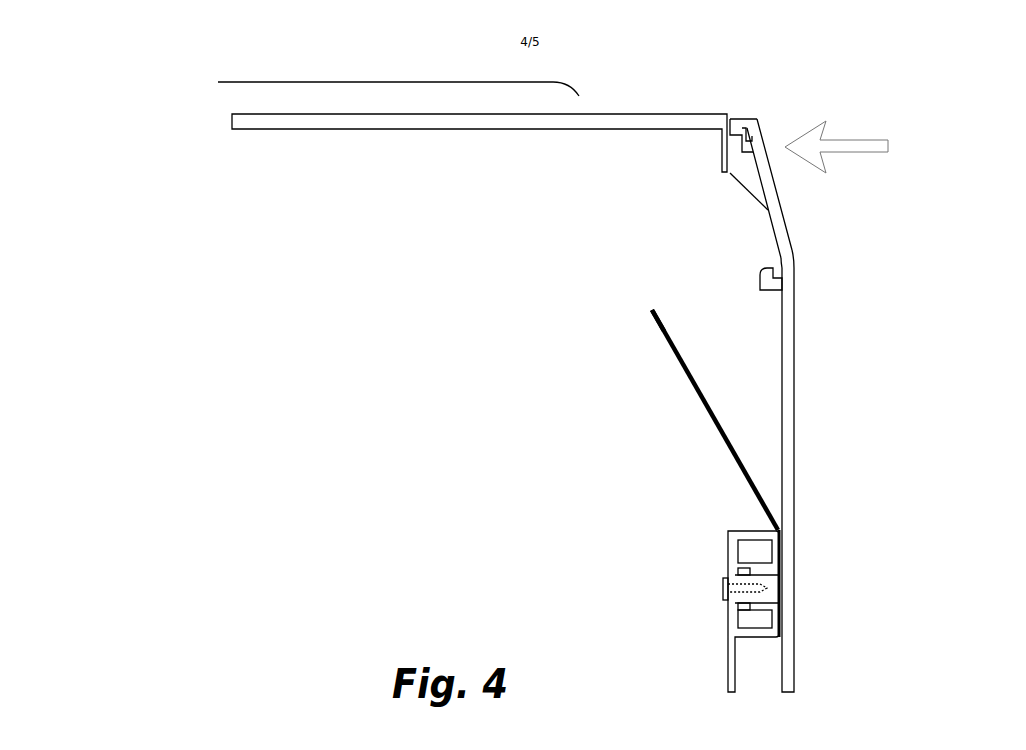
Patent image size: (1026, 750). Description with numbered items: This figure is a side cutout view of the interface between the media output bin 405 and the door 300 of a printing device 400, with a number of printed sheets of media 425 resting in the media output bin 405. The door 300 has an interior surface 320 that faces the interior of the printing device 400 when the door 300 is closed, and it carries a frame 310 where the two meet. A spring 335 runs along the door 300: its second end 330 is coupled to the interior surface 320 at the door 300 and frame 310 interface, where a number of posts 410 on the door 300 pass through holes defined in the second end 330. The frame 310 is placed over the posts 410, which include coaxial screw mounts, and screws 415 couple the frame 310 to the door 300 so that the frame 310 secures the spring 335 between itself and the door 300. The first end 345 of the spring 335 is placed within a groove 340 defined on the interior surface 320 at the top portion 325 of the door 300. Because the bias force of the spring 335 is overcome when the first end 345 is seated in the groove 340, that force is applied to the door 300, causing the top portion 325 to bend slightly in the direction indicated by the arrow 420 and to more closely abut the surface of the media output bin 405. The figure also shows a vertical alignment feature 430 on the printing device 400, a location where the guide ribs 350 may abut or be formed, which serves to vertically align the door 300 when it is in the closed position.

The door 300 is at (788, 382).
The frame 310 is at (730, 550).
The interior surface 320 is at (621, 362).
The top portion 325 is at (764, 147).
The second end 330 is at (780, 620).
The spring 335 is at (713, 427).
The groove 340 is at (781, 271).
The first end 345 is at (653, 316).
The guide ribs 350 is at (752, 172).
The printing device 400 is at (189, 104).
The media output bin 405 is at (255, 130).
The posts 410 is at (768, 590).
The screws 415 is at (723, 590).
The arrow 420 is at (878, 150).
The printed sheets of media 425 is at (495, 82).
The vertical alignment feature 430 is at (742, 153).